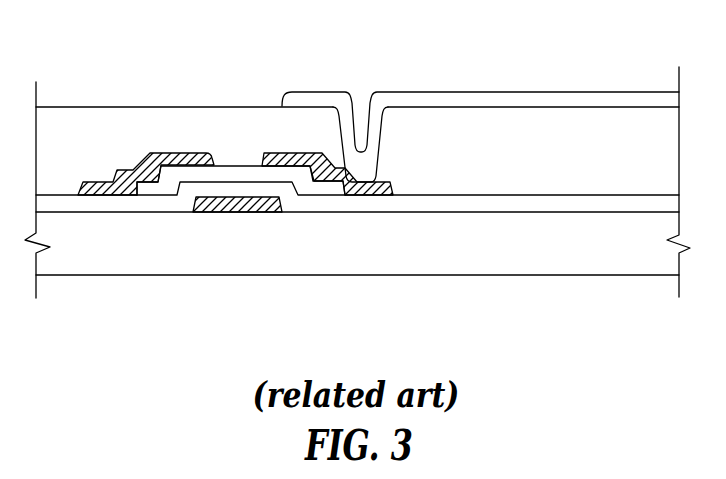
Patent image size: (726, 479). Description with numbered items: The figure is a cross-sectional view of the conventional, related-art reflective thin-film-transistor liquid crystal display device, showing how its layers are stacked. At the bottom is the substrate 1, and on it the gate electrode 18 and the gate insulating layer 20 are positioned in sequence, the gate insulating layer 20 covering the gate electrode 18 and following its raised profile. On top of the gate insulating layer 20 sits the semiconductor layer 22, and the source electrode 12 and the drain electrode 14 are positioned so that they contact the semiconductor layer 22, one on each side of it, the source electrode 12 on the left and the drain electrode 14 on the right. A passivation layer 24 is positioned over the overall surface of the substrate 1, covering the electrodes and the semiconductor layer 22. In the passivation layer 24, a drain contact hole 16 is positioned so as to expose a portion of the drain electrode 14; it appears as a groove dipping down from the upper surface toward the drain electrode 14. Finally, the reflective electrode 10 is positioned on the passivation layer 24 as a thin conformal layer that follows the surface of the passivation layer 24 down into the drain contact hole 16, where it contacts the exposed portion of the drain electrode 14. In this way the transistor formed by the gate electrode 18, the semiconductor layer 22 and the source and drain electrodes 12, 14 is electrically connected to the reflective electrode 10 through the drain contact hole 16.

The substrate 1 is at (436, 252).
The reflective electrode 10 is at (510, 95).
The source electrode 12 is at (178, 152).
The drain electrode 14 is at (376, 194).
The drain contact hole 16 is at (360, 104).
The gate electrode 18 is at (240, 213).
The gate insulating layer 20 is at (528, 203).
The semiconductor layer 22 is at (238, 177).
The passivation layer 24 is at (450, 143).